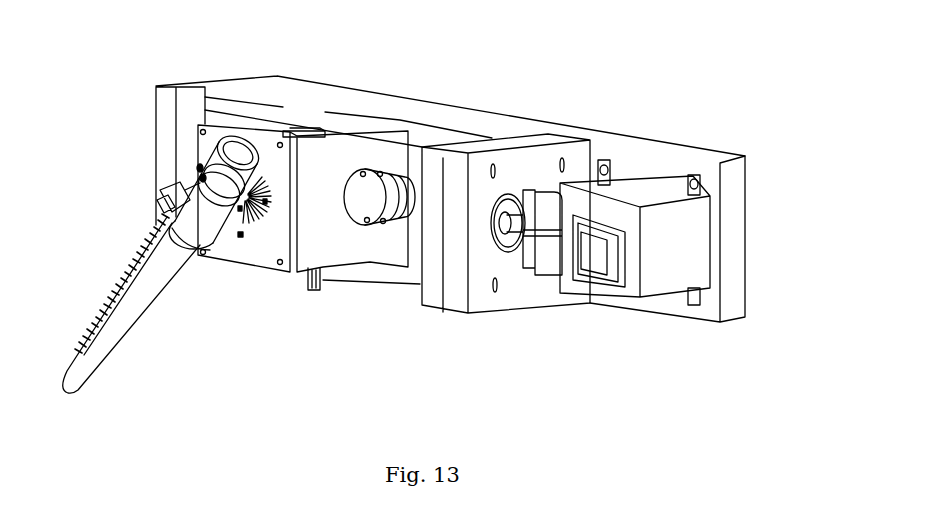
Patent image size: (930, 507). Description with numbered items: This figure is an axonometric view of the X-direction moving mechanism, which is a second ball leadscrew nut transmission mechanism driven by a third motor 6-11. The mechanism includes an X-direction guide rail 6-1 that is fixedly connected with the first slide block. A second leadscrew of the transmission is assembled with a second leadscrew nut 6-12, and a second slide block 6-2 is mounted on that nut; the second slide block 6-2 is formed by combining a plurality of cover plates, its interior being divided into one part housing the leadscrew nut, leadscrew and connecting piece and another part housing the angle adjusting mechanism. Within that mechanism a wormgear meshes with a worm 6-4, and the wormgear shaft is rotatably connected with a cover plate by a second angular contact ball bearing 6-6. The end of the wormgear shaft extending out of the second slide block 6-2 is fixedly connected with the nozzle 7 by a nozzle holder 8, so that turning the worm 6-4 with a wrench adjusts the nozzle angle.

The X-direction guide rail 6-1 is at (470, 124).
The second slide block 6-2 is at (265, 133).
The worm 6-4 is at (310, 286).
The second angular contact ball bearing 6-6 is at (423, 227).
The third motor 6-11 is at (645, 190).
The second leadscrew nut 6-12 is at (355, 222).
The nozzle 7 is at (120, 335).
The nozzle holder 8 is at (185, 193).